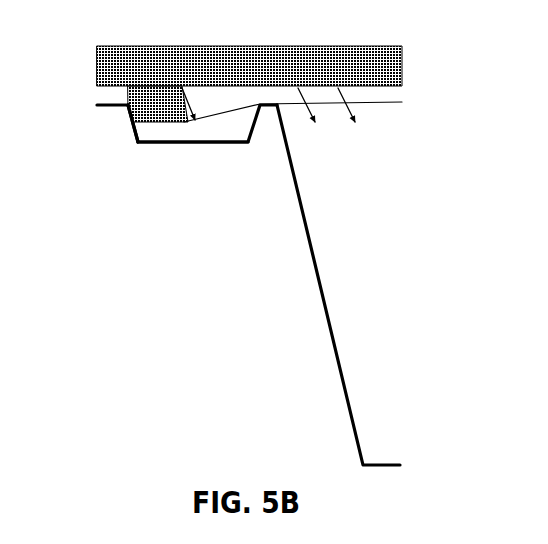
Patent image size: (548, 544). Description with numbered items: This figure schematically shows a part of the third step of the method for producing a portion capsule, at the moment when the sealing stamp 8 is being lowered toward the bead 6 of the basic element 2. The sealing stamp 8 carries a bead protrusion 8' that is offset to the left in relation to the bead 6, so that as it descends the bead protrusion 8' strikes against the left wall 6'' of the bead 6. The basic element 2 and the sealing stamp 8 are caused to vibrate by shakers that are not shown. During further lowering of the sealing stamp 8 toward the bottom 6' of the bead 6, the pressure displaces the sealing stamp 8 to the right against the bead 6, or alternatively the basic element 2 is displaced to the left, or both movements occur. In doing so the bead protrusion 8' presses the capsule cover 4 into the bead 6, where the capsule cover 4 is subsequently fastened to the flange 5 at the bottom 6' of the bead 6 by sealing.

The basic element 2 is at (330, 322).
The capsule cover 4 is at (356, 103).
The flange 5 is at (102, 110).
The bead 6 is at (202, 164).
The bottom of the bead 6' is at (193, 183).
The left wall of the bead 6'' is at (125, 164).
The sealing stamp 8 is at (249, 43).
The bead protrusion 8' is at (114, 81).